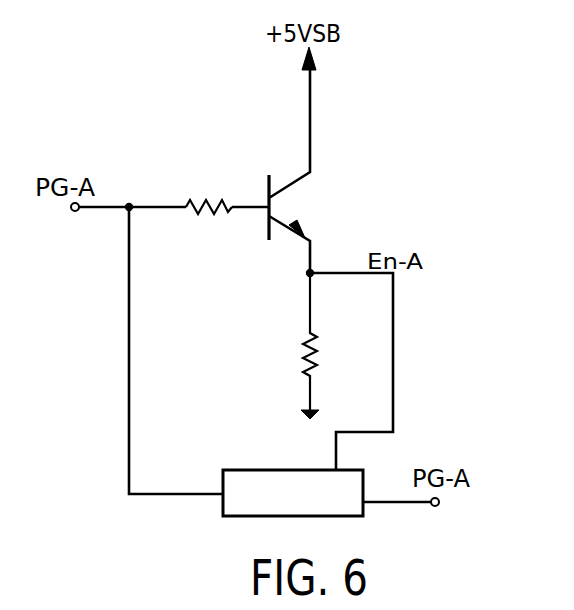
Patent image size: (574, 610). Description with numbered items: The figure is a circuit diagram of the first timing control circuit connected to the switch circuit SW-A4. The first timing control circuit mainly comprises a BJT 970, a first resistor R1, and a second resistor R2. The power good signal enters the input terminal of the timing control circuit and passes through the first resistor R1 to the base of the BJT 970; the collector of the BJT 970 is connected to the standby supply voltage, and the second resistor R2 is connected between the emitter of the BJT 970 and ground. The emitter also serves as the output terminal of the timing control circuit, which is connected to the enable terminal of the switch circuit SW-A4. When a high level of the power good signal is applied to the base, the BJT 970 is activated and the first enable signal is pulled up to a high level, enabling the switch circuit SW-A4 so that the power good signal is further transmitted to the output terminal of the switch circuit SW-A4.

The BJT 970 is at (303, 160).
The first resistor R1 is at (209, 222).
The second resistor R2 is at (287, 341).
The switch circuit SW-A4 is at (293, 493).